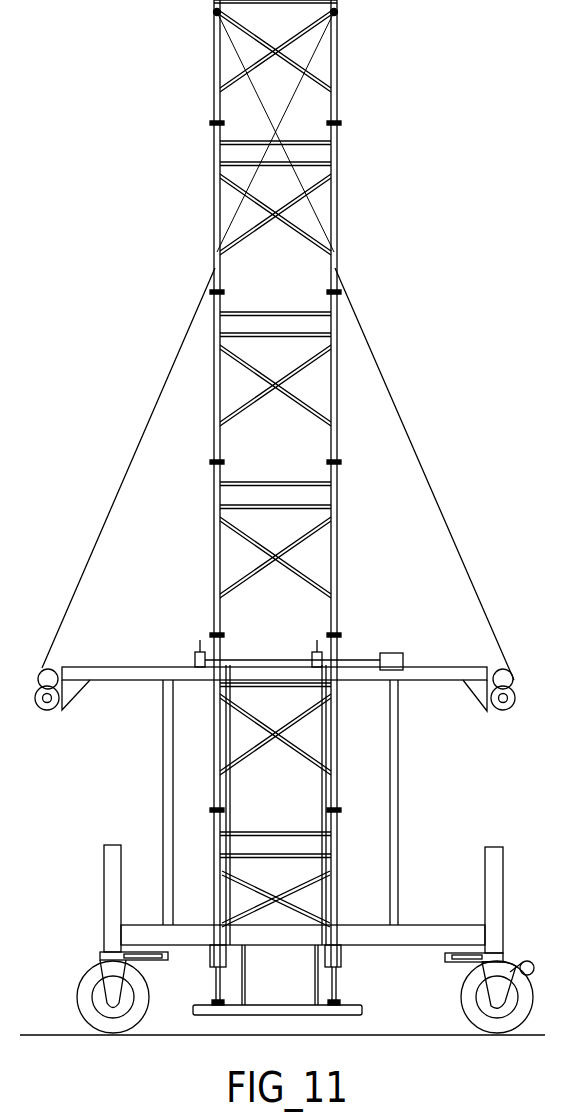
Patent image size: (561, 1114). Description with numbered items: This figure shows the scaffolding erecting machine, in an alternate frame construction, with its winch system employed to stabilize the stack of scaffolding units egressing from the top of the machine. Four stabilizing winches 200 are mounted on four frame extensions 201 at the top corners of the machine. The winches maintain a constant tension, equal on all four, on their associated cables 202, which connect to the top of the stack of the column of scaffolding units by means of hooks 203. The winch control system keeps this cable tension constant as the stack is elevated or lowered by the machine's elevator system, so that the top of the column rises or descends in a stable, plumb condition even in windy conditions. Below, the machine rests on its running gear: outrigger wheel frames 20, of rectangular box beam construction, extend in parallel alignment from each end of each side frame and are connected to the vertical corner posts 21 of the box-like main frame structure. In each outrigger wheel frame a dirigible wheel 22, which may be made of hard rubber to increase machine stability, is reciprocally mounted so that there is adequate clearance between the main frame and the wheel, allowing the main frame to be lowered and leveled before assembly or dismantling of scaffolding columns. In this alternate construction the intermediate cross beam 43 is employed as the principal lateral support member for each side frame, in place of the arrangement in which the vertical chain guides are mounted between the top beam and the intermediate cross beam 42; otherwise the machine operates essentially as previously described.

The outrigger wheel frame 20 is at (504, 882).
The vertical corner post 21 is at (400, 786).
The dirigible wheel 22 is at (462, 1005).
The intermediate cross beam 42 is at (427, 926).
The intermediate cross beam 43 is at (270, 1003).
The stabilizing winch 200 is at (513, 692).
The frame extension 201 is at (443, 668).
The cable 202 is at (445, 523).
The hook 203 is at (217, 13).